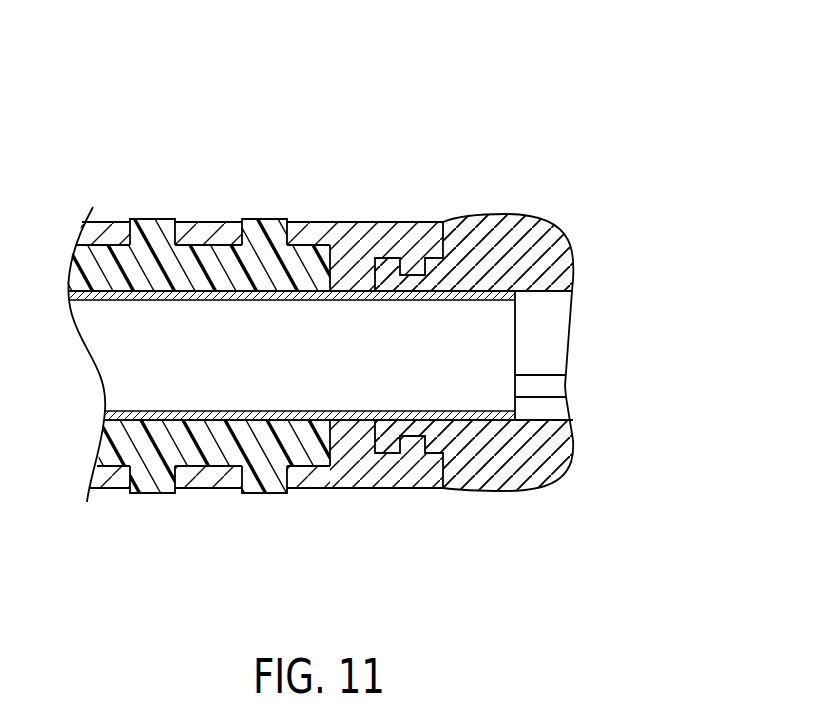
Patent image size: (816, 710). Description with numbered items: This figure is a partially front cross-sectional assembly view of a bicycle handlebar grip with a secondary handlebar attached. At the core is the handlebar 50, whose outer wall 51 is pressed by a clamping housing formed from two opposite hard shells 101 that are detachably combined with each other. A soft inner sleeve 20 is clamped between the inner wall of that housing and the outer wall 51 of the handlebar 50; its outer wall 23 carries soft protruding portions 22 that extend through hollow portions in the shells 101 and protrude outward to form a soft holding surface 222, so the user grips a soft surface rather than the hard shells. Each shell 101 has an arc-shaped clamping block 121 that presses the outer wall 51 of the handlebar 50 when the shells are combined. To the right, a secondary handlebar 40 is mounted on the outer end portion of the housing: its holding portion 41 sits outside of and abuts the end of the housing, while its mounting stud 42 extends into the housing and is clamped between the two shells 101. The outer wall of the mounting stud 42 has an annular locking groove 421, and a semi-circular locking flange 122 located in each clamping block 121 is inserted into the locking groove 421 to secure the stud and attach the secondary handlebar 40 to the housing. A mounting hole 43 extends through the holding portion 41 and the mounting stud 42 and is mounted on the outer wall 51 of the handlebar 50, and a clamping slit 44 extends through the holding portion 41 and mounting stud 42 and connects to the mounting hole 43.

The soft inner sleeve 20 is at (147, 500).
The soft protruding portion 22 is at (105, 221).
The soft holding surface 222 is at (268, 219).
The outer wall of the inner sleeve 23 is at (222, 442).
The handlebar 50 is at (190, 442).
The outer wall of the handlebar 51 is at (278, 448).
The hard shell 101 is at (402, 240).
The arc-shaped clamping block 121 is at (347, 293).
The semi-circular locking flange 122 is at (420, 293).
The secondary handlebar 40 is at (562, 232).
The holding portion 41 is at (522, 475).
The mounting stud 42 is at (395, 458).
The annular locking groove 421 is at (415, 460).
The mounting hole 43 is at (555, 325).
The clamping slit 44 is at (547, 385).